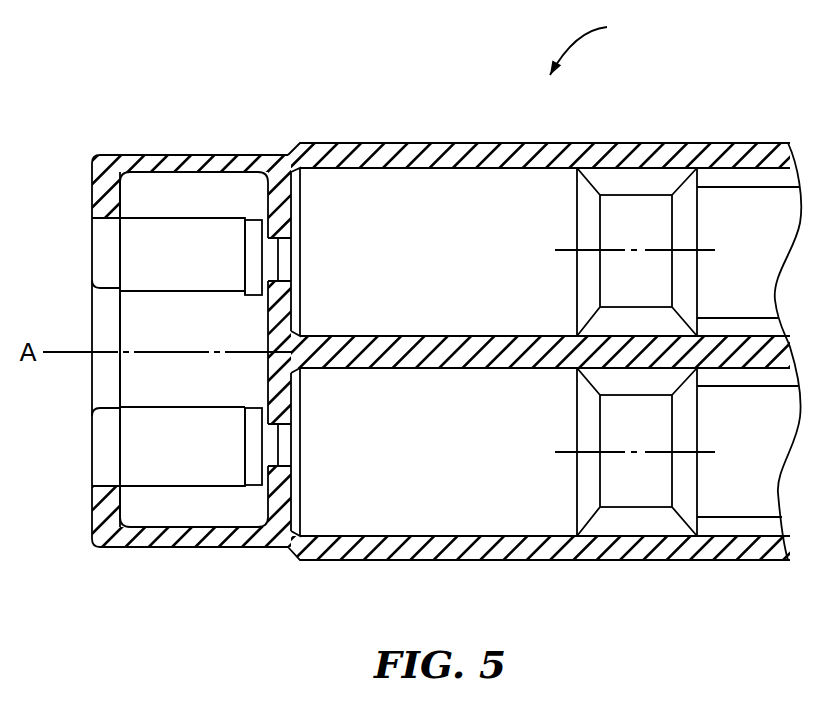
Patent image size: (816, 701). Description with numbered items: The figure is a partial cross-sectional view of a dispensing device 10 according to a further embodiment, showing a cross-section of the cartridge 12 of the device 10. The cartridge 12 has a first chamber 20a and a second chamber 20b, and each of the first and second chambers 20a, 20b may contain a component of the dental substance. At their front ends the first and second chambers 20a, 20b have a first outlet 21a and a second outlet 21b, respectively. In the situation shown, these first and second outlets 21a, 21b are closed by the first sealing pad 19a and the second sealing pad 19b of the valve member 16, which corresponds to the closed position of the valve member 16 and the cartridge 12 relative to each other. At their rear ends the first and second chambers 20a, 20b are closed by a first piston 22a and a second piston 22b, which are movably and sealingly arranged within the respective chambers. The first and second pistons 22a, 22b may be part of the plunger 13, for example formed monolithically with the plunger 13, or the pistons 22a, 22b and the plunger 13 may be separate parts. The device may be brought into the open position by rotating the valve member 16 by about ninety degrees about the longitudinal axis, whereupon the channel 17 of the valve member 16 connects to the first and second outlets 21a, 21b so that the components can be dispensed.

The dispensing device 10 is at (597, 44).
The cartridge 12 is at (538, 553).
The plunger 13 is at (747, 207).
The valve member 16 is at (137, 387).
The channel 17 is at (137, 314).
The first sealing pad 19a is at (283, 247).
The second sealing pad 19b is at (270, 448).
The first chamber 20a is at (421, 187).
The second chamber 20b is at (422, 510).
The first outlet 21a is at (277, 242).
The second outlet 21b is at (282, 458).
The first piston 22a is at (637, 218).
The second piston 22b is at (635, 483).